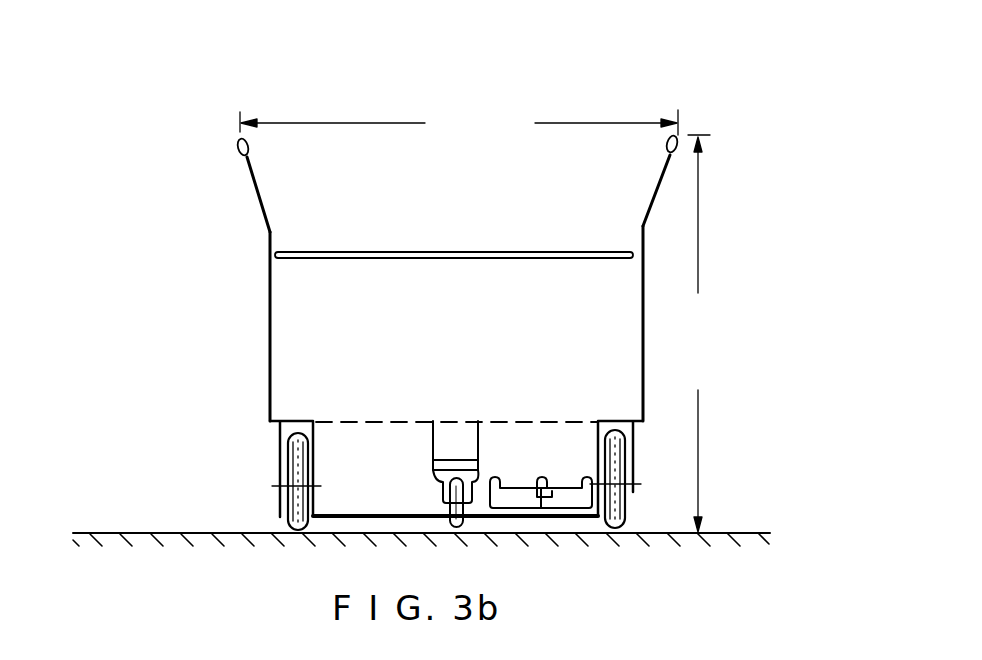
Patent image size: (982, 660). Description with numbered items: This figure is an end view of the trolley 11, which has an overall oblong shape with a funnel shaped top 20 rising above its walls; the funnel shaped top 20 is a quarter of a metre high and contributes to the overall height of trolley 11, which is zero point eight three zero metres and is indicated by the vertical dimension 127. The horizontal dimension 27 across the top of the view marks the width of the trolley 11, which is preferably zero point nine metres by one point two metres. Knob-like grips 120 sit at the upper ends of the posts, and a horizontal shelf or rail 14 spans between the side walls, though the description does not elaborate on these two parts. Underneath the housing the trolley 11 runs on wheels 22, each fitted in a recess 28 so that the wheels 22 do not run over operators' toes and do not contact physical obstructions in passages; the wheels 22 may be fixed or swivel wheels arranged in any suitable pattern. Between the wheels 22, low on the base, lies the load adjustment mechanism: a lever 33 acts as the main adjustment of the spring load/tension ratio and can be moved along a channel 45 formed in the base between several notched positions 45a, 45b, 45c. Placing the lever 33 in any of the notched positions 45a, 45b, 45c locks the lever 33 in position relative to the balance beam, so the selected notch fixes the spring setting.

The trolley 11 is at (697, 121).
The funnel shaped top 20 is at (253, 190).
The handle grip 120 is at (237, 148).
The shelf 14 is at (274, 257).
The recess 28 is at (287, 425).
The wheels 22 is at (288, 512).
The channel 45 is at (580, 506).
The notched position 45a is at (584, 476).
The notched position 45b is at (545, 476).
The notched position 45c is at (492, 476).
The lever 33 is at (546, 498).
The overall height of trolley 127 is at (697, 333).
The width of trolley 27 is at (459, 124).